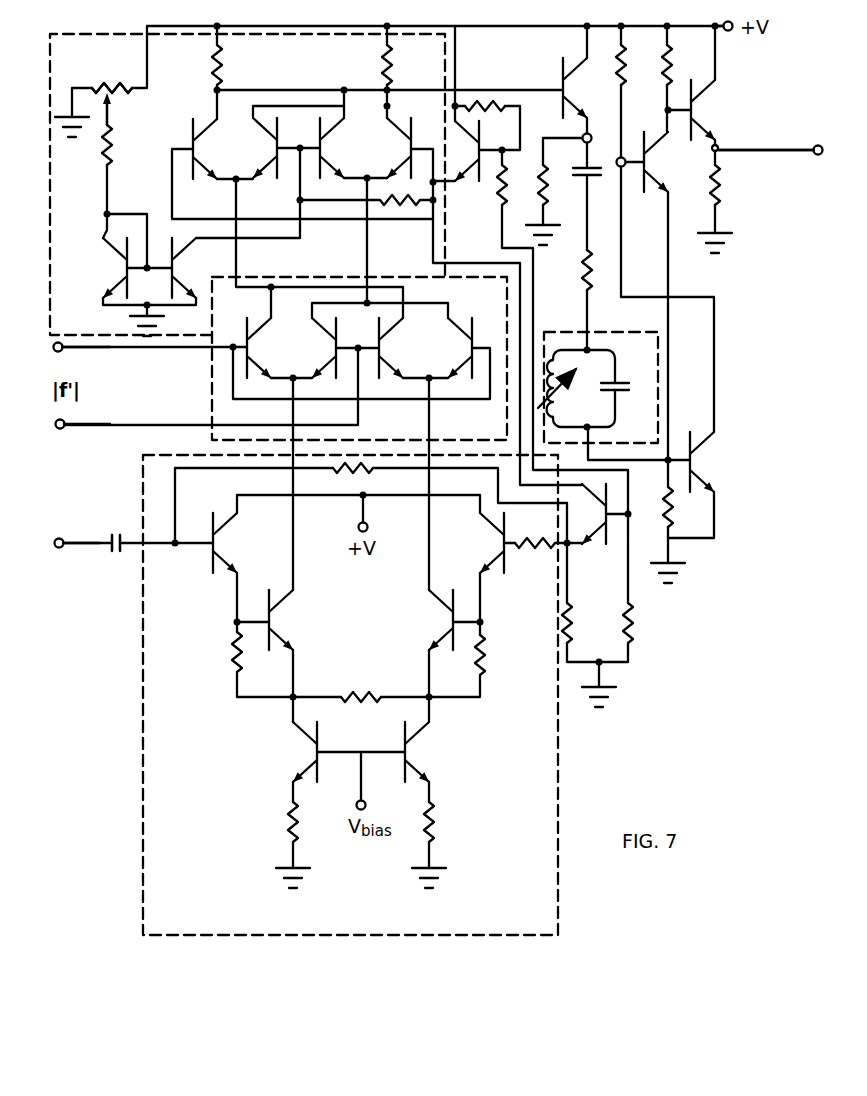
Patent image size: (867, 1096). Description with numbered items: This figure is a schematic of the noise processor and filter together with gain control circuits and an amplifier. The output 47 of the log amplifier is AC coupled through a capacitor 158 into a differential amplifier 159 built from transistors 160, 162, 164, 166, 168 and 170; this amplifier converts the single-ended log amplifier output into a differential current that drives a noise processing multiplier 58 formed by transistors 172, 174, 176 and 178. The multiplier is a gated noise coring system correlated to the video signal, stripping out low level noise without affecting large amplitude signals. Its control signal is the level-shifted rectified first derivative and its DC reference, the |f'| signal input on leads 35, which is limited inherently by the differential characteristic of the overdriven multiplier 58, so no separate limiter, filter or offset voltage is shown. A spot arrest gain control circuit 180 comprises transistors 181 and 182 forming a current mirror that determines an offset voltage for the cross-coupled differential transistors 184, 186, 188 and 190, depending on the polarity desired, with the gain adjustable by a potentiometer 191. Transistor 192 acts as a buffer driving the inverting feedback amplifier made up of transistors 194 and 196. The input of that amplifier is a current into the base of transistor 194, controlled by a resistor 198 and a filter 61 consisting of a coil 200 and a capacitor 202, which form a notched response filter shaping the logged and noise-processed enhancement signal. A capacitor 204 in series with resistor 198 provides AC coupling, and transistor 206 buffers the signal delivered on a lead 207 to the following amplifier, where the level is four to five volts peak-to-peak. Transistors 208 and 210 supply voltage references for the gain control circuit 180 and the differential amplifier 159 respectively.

The spot arrest gain control circuit 180 is at (118, 30).
The potentiometer 191 is at (127, 60).
The cross-coupled differential transistor 184 is at (189, 130).
The cross-coupled differential transistor 186 is at (284, 142).
The cross-coupled differential transistor 188 is at (314, 170).
The cross-coupled differential transistor 190 is at (425, 117).
The transistor 208 is at (484, 147).
The transistor 192 is at (562, 78).
The capacitor 204 is at (549, 178).
The transistor 196 is at (638, 138).
The transistor 206 is at (684, 86).
The lead 207 is at (792, 154).
The transistor 181 is at (116, 270).
The transistor 182 is at (180, 270).
The noise processing multiplier 58 is at (323, 270).
The leads 35 is at (62, 352).
The transistor 172 is at (260, 336).
The transistor 174 is at (330, 354).
The transistor 176 is at (400, 336).
The transistor 178 is at (464, 354).
The resistor 198 is at (583, 262).
The filter 61 is at (573, 326).
The coil 200 is at (552, 403).
The capacitor 202 is at (616, 380).
The capacitor 158 is at (108, 530).
The output 47 is at (80, 548).
The transistor 160 is at (231, 534).
The transistor 162 is at (283, 616).
The transistor 164 is at (478, 547).
The transistor 166 is at (425, 626).
The transistor 168 is at (303, 753).
The transistor 170 is at (422, 753).
The differential amplifier 159 is at (138, 810).
The transistor 210 is at (614, 542).
The transistor 194 is at (706, 462).